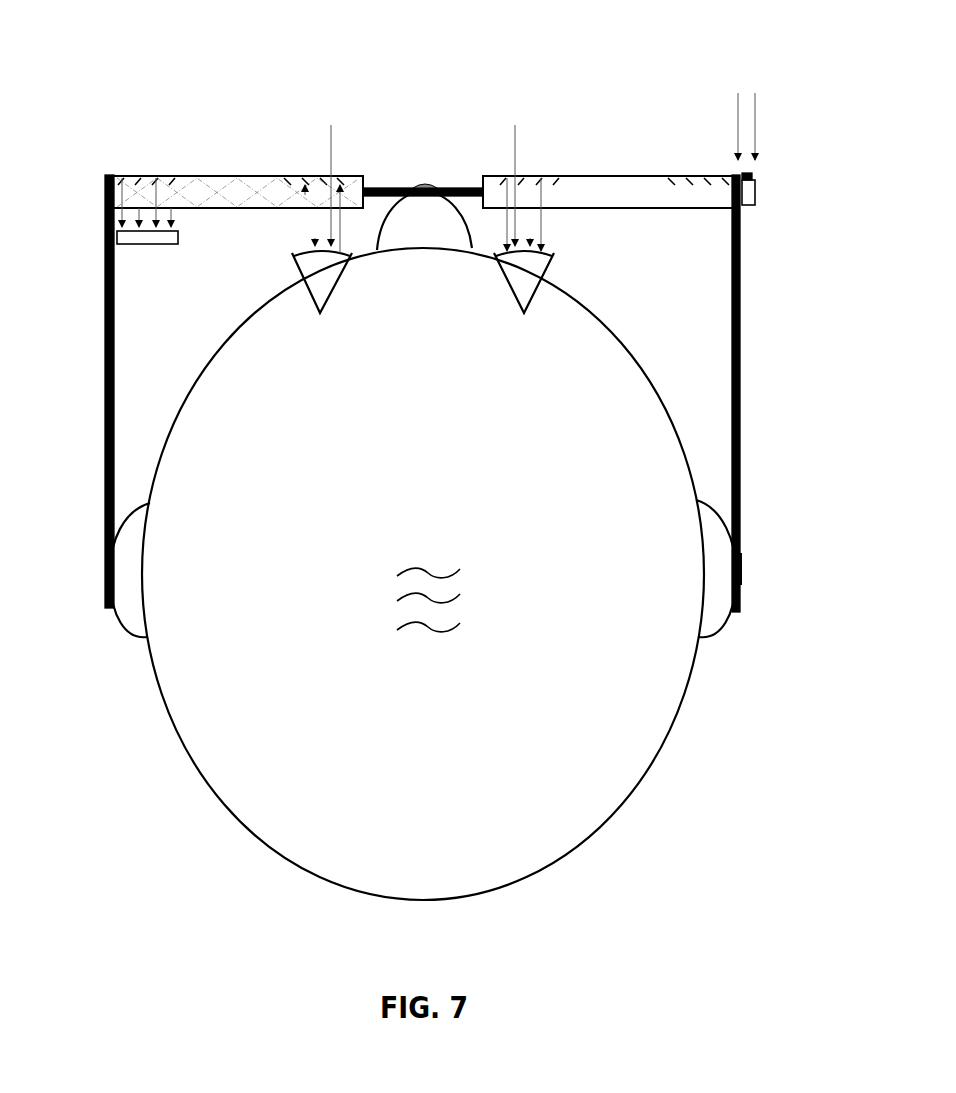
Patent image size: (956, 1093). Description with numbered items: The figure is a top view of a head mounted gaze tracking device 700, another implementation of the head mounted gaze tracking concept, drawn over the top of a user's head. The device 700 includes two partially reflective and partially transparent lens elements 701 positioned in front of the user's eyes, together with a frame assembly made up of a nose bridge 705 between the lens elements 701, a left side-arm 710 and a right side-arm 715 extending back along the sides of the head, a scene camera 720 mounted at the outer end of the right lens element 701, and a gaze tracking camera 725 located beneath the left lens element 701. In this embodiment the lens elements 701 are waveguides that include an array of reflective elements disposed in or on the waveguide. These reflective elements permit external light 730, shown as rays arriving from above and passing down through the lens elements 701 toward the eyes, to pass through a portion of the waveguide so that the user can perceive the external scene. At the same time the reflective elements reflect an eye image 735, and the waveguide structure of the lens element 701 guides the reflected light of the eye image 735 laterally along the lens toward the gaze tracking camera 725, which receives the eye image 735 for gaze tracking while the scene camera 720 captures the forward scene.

The head mounted gaze tracking device 700 is at (84, 67).
The lens elements 701 is at (233, 175).
The nose bridge 705 is at (463, 187).
The left side-arm 710 is at (105, 392).
The right side-arm 715 is at (740, 392).
The scene camera 720 is at (755, 188).
The gaze tracking camera 725 is at (133, 243).
The external light 730 is at (317, 130).
The eye image 735 is at (197, 202).